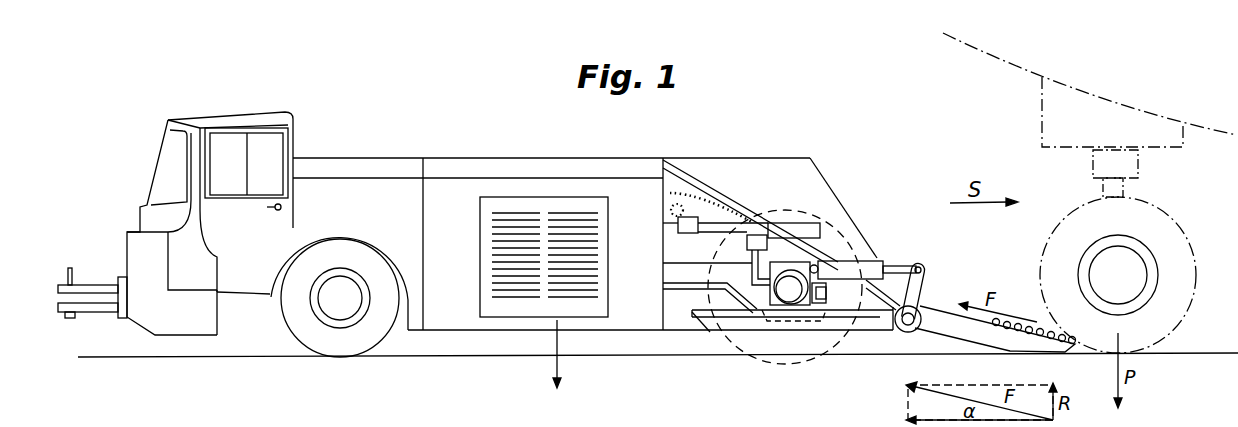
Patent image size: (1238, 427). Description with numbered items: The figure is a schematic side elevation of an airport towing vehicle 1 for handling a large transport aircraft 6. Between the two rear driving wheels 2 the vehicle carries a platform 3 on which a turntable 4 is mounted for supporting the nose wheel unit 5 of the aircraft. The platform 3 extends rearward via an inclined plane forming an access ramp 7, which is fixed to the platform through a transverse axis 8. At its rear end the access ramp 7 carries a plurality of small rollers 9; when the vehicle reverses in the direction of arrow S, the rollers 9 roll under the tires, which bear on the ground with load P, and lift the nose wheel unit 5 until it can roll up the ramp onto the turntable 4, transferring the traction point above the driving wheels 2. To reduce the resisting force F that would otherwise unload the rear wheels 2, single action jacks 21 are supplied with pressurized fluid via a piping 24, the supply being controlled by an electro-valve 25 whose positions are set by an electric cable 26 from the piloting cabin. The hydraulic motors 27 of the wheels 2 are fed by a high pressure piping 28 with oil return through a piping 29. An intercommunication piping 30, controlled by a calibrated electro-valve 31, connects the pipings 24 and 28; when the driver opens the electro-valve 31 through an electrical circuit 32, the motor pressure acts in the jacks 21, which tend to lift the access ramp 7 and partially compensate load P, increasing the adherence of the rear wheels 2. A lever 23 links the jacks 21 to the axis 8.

The airport towing vehicle 1 is at (338, 167).
The rear driving wheels 2 is at (742, 338).
The platform 3 is at (680, 327).
The turntable 4 is at (873, 323).
The nose wheel unit 5 is at (1195, 283).
The large transport aircraft 6 is at (1022, 68).
The access ramp 7 is at (942, 317).
The transverse axis 8 is at (907, 320).
The small rollers 9 is at (1017, 322).
The jacks 21 is at (873, 265).
The lever arm 23 is at (923, 283).
The piping 24 is at (798, 217).
The electro-valve 25 is at (692, 233).
The electric cable 26 is at (669, 206).
The hydraulic motors 27 is at (792, 300).
The high pressure piping 28 is at (676, 267).
The piping 29 is at (677, 291).
The intercommunication piping 30 is at (779, 240).
The electro-valve 31 is at (757, 233).
The electrical circuit 32 is at (672, 192).